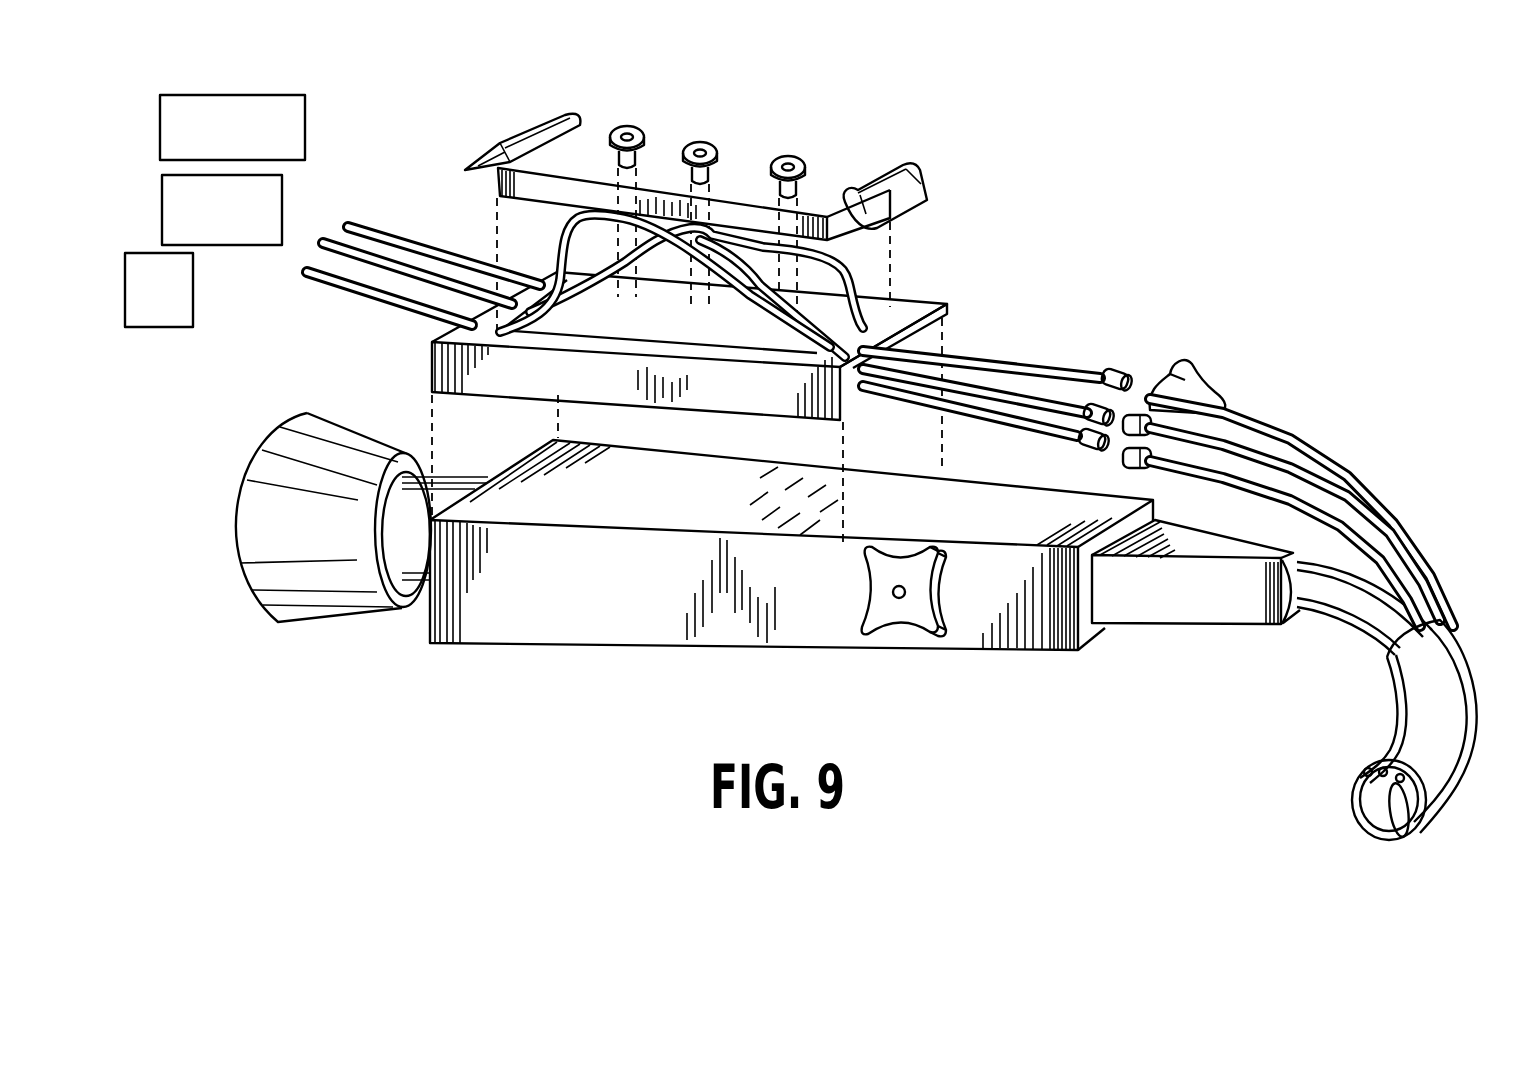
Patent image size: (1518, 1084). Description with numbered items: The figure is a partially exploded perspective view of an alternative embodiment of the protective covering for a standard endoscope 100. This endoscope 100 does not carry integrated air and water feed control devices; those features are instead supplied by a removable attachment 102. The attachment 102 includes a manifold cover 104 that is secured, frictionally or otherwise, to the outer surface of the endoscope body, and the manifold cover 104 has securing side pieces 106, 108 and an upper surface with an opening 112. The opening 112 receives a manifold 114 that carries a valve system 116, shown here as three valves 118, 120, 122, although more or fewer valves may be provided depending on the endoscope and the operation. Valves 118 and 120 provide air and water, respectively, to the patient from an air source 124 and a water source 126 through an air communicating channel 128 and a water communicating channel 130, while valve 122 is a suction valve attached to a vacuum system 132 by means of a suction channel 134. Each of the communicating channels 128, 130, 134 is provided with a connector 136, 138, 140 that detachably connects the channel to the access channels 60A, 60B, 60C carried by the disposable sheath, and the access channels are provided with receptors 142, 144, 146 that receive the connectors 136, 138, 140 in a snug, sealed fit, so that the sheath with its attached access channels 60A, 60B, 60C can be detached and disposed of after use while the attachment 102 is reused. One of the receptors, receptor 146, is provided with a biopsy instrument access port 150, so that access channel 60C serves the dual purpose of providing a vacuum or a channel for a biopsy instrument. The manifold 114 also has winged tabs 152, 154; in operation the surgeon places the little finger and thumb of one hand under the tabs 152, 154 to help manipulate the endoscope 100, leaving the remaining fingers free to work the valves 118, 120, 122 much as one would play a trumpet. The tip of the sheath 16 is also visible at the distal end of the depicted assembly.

The handpiece tip 16 is at (1377, 812).
The access channel 60A is at (1165, 467).
The access channel 60B is at (1213, 454).
The access channel 60C is at (1333, 470).
The endoscope 100 is at (438, 328).
The attachment 102 is at (468, 243).
The manifold cover 104 is at (430, 368).
The securing side piece 106 is at (568, 387).
The securing side piece 108 is at (955, 305).
The opening 112 is at (682, 336).
The manifold 114 is at (665, 130).
The valve system 116 is at (710, 128).
The valve 118 is at (630, 127).
The valve 120 is at (713, 142).
The suction valve 122 is at (787, 157).
The air source 124 is at (292, 270).
The water source 126 is at (312, 236).
The air communicating channel 128 is at (307, 280).
The water communicating channel 130 is at (407, 270).
The vacuum system 132 is at (338, 220).
The suction channel 134 is at (387, 224).
The connector 136 is at (1100, 447).
The connector 138 is at (1108, 374).
The connector 140 is at (1126, 356).
The receptor 142 is at (1122, 462).
The receptor 144 is at (1134, 412).
The receptor 146 is at (1204, 402).
The biopsy instrument access port 150 is at (1198, 397).
The winged tab 152 is at (525, 128).
The winged tab 154 is at (907, 190).